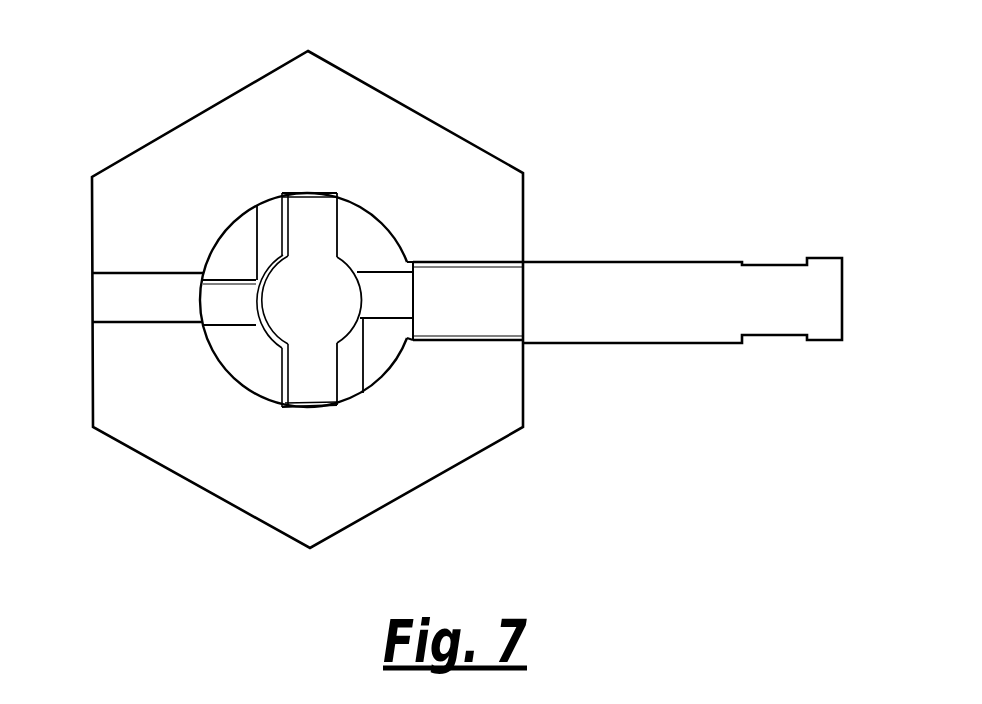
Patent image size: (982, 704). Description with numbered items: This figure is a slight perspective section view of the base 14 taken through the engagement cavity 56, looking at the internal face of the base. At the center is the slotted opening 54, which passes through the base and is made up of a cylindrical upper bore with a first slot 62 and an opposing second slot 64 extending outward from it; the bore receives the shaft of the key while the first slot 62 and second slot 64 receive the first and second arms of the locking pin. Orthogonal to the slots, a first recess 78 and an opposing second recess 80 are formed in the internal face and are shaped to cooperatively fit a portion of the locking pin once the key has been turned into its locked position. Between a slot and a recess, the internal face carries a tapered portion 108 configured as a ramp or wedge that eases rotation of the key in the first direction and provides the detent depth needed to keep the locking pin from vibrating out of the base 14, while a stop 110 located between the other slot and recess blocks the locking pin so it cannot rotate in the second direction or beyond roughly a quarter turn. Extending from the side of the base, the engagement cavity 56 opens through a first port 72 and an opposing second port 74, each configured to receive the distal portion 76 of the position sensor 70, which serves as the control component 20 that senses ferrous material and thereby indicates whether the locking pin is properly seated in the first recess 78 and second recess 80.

The base 14 is at (415, 72).
The control component 20 is at (682, 263).
The position sensor 70 is at (637, 277).
The slotted opening 54 is at (300, 310).
The engagement cavity 56 is at (262, 411).
The first slot 62 is at (313, 400).
The second slot 64 is at (305, 213).
The first port 72 is at (490, 345).
The second port 74 is at (105, 305).
The distal portion 76 is at (428, 268).
The first recess 78 is at (412, 335).
The second recess 80 is at (230, 302).
The tapered portion 108 is at (272, 237).
The stop 110 is at (377, 240).